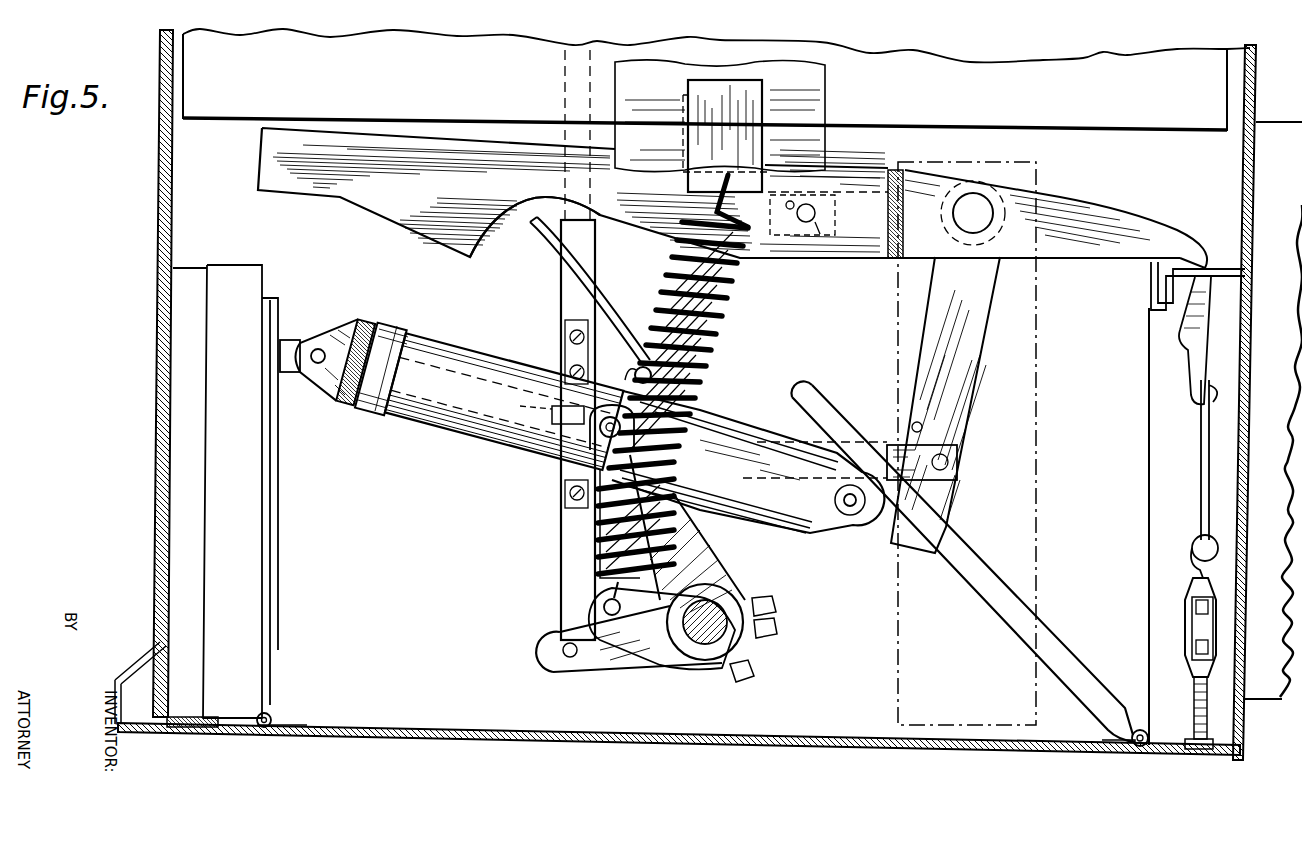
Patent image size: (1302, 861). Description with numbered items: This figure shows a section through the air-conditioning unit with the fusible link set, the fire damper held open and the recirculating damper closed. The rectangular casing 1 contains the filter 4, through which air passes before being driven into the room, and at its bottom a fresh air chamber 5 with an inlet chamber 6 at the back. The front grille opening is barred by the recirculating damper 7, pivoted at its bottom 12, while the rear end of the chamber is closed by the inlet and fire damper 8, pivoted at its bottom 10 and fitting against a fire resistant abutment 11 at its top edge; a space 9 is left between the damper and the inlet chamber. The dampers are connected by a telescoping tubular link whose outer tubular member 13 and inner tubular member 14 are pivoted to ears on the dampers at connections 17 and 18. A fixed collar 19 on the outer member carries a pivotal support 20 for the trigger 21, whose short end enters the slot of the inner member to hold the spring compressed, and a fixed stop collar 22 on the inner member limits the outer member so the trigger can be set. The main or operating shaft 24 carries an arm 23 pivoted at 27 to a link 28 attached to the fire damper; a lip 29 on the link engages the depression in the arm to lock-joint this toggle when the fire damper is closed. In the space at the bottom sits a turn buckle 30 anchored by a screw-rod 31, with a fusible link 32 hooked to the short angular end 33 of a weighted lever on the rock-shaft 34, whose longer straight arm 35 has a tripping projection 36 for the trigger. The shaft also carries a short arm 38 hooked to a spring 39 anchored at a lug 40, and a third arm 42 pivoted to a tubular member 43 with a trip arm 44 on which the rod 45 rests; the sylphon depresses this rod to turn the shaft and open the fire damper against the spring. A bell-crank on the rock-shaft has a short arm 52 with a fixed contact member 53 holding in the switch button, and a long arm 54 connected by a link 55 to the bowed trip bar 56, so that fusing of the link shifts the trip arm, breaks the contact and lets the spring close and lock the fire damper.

The casing 1 is at (1258, 54).
The filter 4 is at (1085, 120).
The fresh air chamber 5 is at (975, 443).
The inlet chamber 6 is at (1290, 133).
The recirculating damper 7 is at (278, 492).
The inlet and fire damper 8 is at (973, 572).
The space 9 is at (1162, 526).
The pivot of damper 8 10 is at (1136, 748).
The fire resistant abutment 11 is at (1152, 300).
The pivot of damper 7 12 is at (264, 730).
The outer tubular member 13 is at (490, 446).
The inner tubular member 14 is at (346, 405).
The pivotal connection 17 is at (302, 373).
The pivotal connection 18 is at (864, 520).
The fixed collar 19 is at (590, 510).
The pivotal support 20 is at (640, 368).
The trigger 21 is at (583, 300).
The fixed stop collar 22 is at (366, 418).
The arm 23 is at (693, 536).
The main or operating shaft 24 is at (703, 642).
The pivot 27 is at (588, 445).
The link 28 is at (748, 452).
The lip 29 is at (560, 403).
The turn buckle 30 is at (1215, 632).
The screw-rod 31 is at (1194, 697).
The fusible link 32 is at (1200, 488).
The short angular end 33 is at (1198, 352).
The rock-shaft 34 is at (974, 213).
The longer straight arm 35 is at (355, 198).
The tripping projection 36 is at (745, 257).
The short arm 38 is at (638, 632).
The spring 39 is at (722, 327).
The lug 40 is at (750, 125).
The third arm 42 is at (580, 672).
The tubular member 43 is at (558, 586).
The trip arm 44 is at (520, 402).
The rod or telescoping member 45 is at (597, 218).
The short arm 52 is at (837, 228).
The fixed contact member 53 is at (822, 190).
The long arm 54 is at (963, 418).
The link 55 is at (870, 442).
The trip bar 56 is at (597, 544).